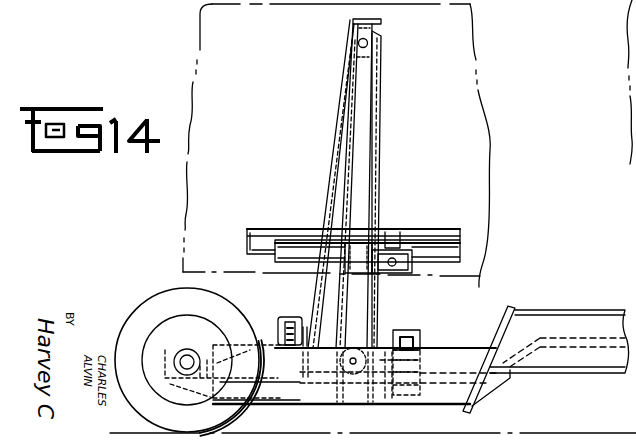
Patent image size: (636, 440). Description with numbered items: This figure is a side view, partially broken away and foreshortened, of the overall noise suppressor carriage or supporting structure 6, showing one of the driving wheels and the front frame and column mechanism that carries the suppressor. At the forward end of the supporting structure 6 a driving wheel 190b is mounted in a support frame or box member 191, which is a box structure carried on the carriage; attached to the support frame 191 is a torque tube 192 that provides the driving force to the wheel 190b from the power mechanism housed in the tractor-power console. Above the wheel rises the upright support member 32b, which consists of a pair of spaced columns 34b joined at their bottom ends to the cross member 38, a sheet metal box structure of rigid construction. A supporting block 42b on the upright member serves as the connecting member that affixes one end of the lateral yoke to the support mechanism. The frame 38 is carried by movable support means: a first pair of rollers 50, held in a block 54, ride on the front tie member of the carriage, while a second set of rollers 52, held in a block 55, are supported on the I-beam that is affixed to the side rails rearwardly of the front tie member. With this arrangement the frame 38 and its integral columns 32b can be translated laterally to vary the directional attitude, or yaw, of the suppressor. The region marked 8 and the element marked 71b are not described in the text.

The machine frame portion 8 is at (505, 60).
The upright support member 32b is at (386, 116).
The spaced columns 34b is at (362, 152).
The horizontal beam 71b is at (391, 224).
The supporting block 42b is at (402, 284).
The cross member 38 is at (376, 412).
The driving wheel 190b is at (145, 303).
The torque tube 192 is at (174, 354).
The support frame 191 is at (259, 410).
The supporting structure 6 is at (160, 277).
The rollers 50 is at (278, 334).
The block 54 is at (290, 318).
The block 55 is at (408, 332).
The rollers 52 is at (422, 348).